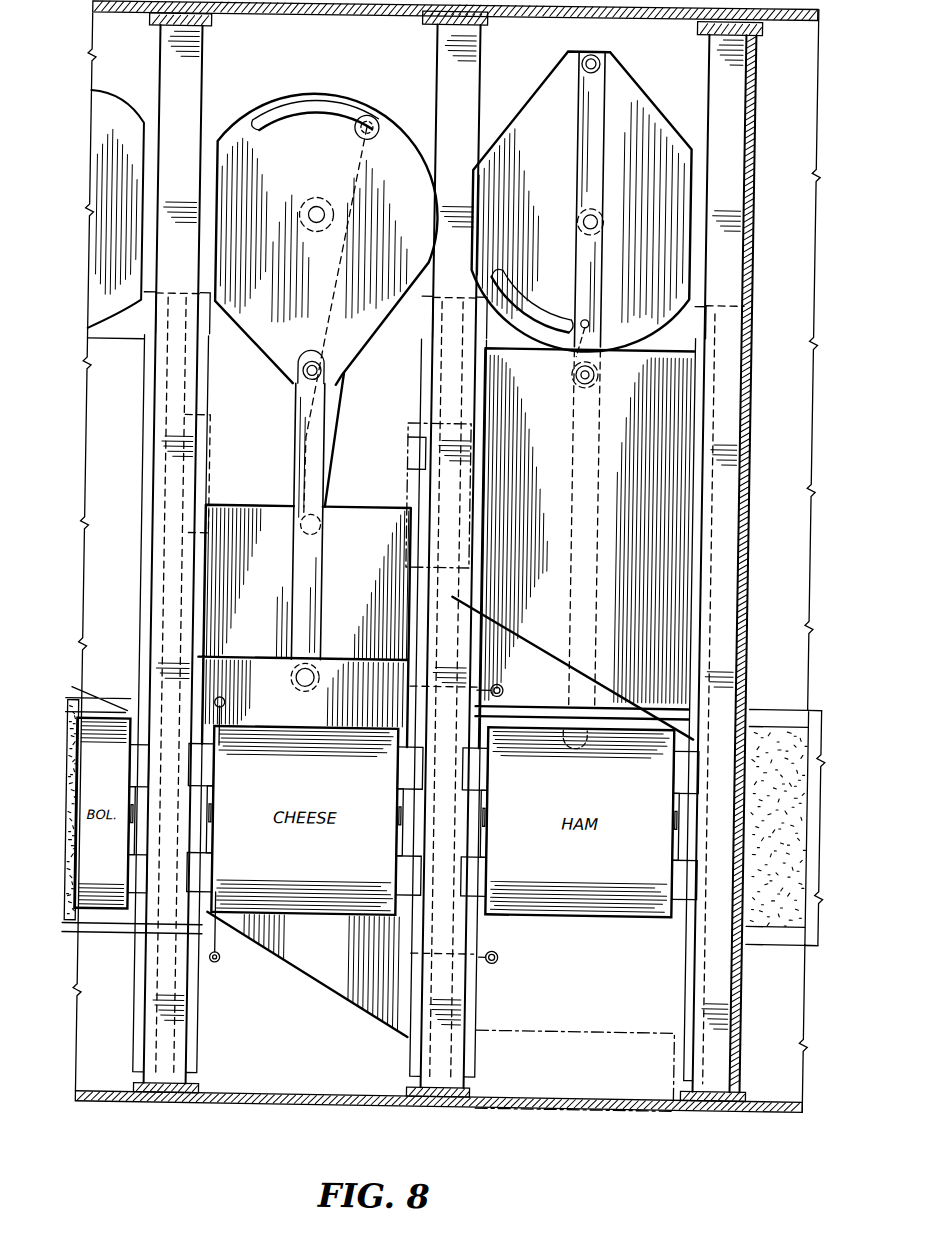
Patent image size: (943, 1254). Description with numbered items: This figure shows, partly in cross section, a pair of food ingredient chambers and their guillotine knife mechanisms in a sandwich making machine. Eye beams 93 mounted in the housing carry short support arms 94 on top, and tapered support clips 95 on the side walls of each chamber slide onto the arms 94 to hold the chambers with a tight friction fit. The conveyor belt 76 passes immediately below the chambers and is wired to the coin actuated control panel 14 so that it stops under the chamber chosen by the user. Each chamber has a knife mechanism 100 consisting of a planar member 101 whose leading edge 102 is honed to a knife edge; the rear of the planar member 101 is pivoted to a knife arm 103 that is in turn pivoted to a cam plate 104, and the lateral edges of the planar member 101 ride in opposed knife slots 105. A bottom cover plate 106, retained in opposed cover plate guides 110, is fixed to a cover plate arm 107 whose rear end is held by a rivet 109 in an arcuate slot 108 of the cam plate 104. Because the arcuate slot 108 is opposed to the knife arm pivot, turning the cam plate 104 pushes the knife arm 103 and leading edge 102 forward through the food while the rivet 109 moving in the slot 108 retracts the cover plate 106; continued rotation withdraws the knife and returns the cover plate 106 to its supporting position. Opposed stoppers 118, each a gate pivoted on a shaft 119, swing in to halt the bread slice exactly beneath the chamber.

The coin actuated control panel 14 is at (601, 1108).
The conveyor belt 76 is at (805, 875).
The eye beams 93 is at (159, 67).
The support arms 94 is at (212, 842).
The support clips 95 is at (198, 759).
The knife mechanism 100 is at (702, 396).
The planar member 101 is at (682, 525).
The leading edge 102 is at (619, 688).
The knife arm 103 is at (588, 138).
The cam plate 104 is at (222, 231).
The knife slots 105 is at (188, 430).
The bottom cover plate 106 is at (277, 523).
The cover plate arm 107 is at (340, 407).
The arcuate slot 108 is at (273, 111).
The rivet 109 is at (358, 120).
The cover plate guides 110 is at (417, 384).
The stoppers 118 is at (225, 769).
The shaft 119 is at (228, 706).